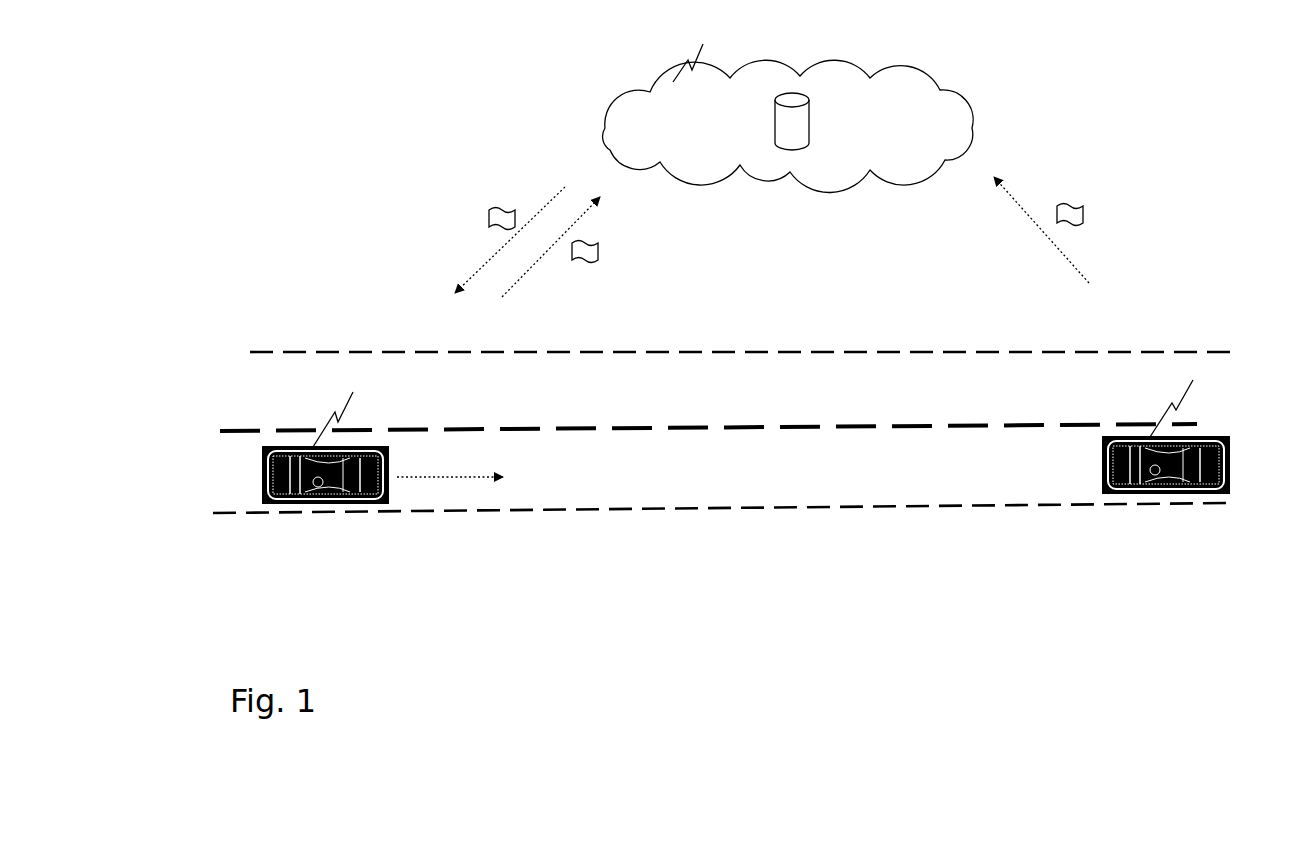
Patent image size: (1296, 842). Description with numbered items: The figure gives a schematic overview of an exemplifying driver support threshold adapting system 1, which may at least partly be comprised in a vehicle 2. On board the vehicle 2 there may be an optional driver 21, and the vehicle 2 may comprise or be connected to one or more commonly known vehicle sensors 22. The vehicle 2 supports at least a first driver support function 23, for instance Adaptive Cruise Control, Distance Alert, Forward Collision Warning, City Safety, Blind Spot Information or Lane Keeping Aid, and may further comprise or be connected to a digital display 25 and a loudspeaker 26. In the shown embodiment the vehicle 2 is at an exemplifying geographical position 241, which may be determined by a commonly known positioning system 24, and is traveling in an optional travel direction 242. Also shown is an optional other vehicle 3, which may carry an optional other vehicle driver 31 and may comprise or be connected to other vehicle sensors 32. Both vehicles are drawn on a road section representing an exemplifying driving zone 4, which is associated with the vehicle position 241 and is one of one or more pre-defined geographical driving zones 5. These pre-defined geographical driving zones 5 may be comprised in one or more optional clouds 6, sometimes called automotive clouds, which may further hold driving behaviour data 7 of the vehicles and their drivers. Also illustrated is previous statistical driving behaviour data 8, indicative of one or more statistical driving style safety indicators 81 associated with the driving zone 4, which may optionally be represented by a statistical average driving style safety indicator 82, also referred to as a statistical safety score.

The driver support threshold adapting system 1 is at (913, 666).
The vehicle 2 is at (339, 484).
The geographical position 241 is at (339, 484).
The driver 21 is at (357, 493).
The vehicle sensors 22 is at (320, 487).
The first driver support function 23 is at (353, 462).
The positioning system 24 is at (333, 492).
The digital display 25 is at (419, 409).
The loudspeaker 26 is at (357, 453).
The travel direction 242 is at (450, 463).
The other vehicle 3 is at (1160, 488).
The other vehicle driver 31 is at (1178, 470).
The other vehicle sensors 32 is at (1153, 470).
The driving zone 4 is at (822, 322).
The pre-defined geographical driving zones 5 is at (808, 94).
The clouds 6 is at (612, 108).
The driving behaviour data 7 is at (598, 246).
The previous statistical driving behaviour data 8 is at (756, 235).
The statistical driving style safety indicators 81 is at (756, 235).
The statistical average driving style safety indicator 82 is at (490, 212).